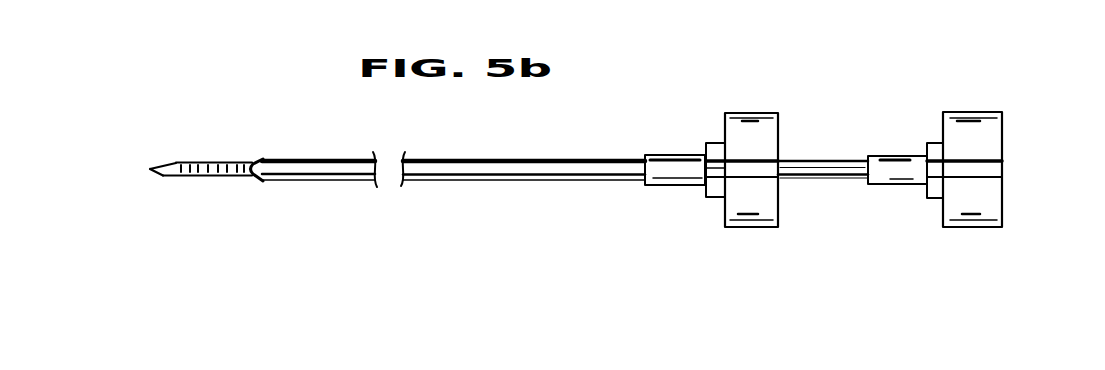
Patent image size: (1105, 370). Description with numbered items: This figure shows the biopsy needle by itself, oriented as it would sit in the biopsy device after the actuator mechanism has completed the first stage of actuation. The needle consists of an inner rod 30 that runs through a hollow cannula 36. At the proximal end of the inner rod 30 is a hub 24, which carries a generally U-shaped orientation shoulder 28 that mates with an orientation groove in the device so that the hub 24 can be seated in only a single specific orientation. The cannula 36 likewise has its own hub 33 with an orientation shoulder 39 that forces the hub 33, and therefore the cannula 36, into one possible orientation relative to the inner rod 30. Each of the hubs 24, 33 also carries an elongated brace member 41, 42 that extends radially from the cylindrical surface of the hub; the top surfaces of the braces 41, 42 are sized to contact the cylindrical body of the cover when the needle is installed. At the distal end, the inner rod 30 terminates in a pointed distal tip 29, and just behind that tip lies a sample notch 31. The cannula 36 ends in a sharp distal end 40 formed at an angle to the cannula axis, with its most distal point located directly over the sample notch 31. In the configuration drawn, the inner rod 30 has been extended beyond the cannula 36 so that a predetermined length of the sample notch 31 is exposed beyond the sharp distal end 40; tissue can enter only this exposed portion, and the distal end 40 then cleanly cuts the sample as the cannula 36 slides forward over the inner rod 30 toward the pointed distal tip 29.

The hub 24 is at (987, 133).
The orientation shoulder 28 is at (937, 152).
The pointed distal tip 29 is at (156, 172).
The inner rod 30 is at (838, 167).
The sample notch 31 is at (202, 163).
The hub 33 is at (763, 132).
The hollow cannula 36 is at (334, 170).
The orientation shoulder 39 is at (716, 147).
The sharp distal end 40 is at (255, 164).
The elongated brace member 41 is at (987, 172).
The elongated brace member 42 is at (722, 172).